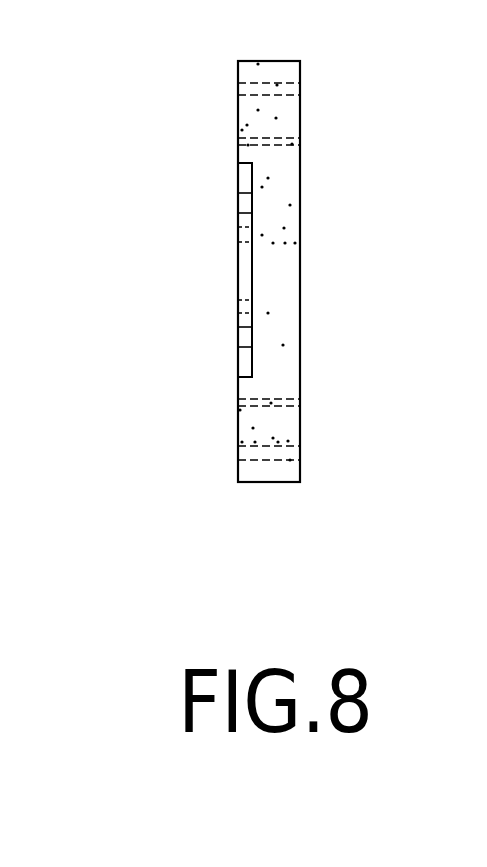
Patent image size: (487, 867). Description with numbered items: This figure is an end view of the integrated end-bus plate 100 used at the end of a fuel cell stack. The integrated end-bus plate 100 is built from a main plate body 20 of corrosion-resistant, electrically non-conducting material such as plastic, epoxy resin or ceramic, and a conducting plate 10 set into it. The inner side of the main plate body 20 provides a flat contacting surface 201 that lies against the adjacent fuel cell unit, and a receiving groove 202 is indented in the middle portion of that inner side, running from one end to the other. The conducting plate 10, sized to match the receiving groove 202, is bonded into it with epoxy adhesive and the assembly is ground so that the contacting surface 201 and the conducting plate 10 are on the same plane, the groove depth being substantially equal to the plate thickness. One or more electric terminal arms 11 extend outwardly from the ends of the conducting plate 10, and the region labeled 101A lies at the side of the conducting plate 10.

The integrated end-bus plate 100 is at (333, 461).
The main plate body 20 is at (282, 62).
The contacting surface 201 is at (238, 67).
The receiving groove 202 is at (253, 351).
The conducting plate 10 is at (247, 182).
The electric terminal arm 11 is at (249, 266).
The side portion of inner element 101A is at (236, 308).